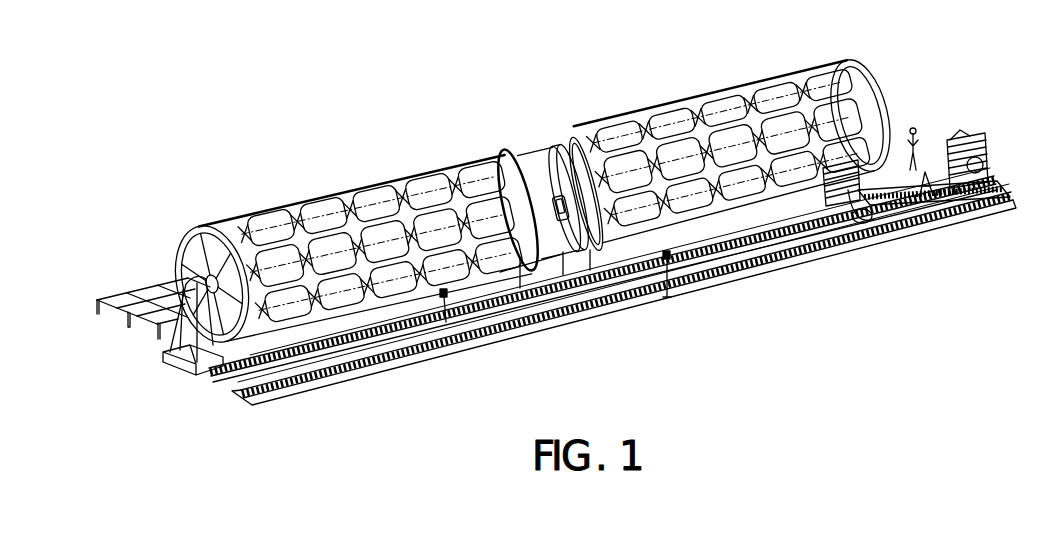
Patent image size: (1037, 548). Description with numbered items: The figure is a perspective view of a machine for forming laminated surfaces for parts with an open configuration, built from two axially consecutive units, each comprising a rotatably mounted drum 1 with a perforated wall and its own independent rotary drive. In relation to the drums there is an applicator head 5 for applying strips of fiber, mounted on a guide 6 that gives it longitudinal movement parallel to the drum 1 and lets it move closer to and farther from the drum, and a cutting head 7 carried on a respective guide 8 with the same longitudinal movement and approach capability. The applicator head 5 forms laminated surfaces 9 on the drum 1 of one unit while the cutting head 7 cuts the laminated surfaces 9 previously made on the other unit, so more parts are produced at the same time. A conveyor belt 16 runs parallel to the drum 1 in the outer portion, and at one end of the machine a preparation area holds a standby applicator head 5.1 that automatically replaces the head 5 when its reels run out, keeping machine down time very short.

The drum 1 is at (545, 138).
The applicator head 5 is at (837, 210).
The standby applicator head 5.1 is at (970, 137).
The guide 6 is at (767, 247).
The cutting head 7 is at (447, 322).
The guide 8 is at (393, 325).
The laminated surfaces 9 is at (343, 190).
The conveyor belt 16 is at (142, 293).